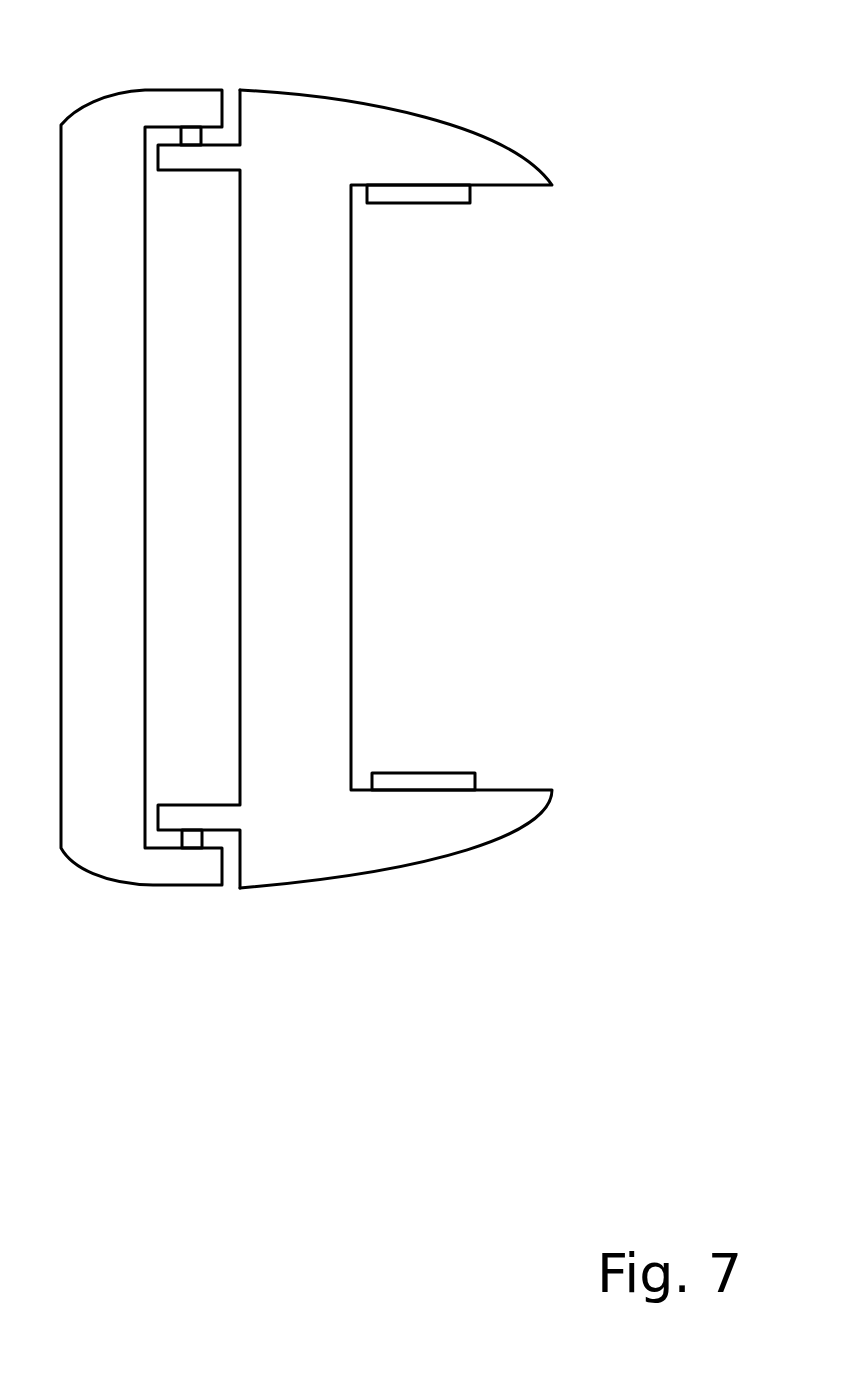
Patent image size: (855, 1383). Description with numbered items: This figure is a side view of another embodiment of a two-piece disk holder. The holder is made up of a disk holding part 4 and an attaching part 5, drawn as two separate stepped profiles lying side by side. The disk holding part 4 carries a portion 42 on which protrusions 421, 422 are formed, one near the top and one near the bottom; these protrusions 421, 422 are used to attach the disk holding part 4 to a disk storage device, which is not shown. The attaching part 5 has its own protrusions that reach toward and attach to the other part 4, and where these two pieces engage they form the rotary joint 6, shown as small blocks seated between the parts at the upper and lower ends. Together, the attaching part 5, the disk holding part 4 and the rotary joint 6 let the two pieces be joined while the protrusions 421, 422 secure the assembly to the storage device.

The disk holding part 4 is at (303, 180).
The attaching part 5 is at (97, 170).
The rotary joint 6 is at (188, 133).
The disk holding part portion 42 is at (522, 172).
The protrusion 421 is at (448, 197).
The protrusion 422 is at (433, 777).